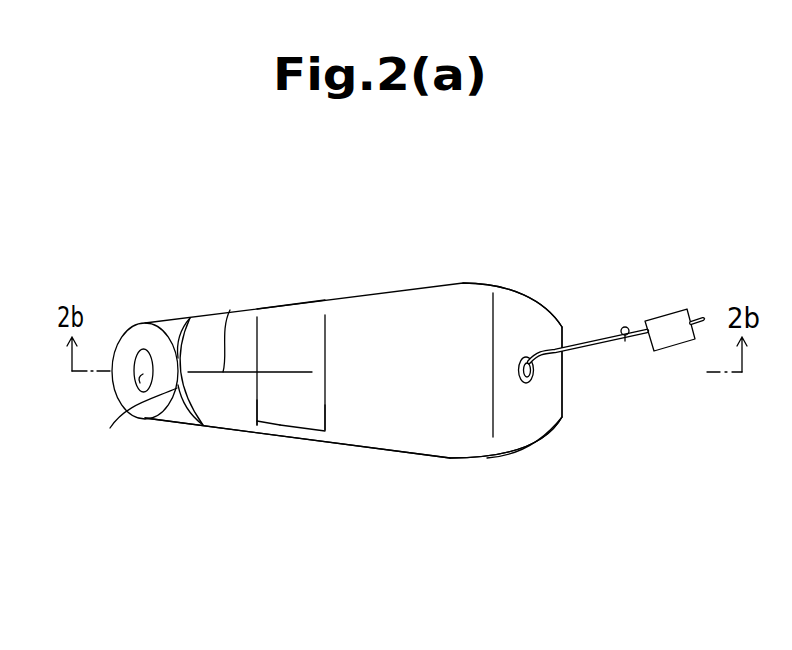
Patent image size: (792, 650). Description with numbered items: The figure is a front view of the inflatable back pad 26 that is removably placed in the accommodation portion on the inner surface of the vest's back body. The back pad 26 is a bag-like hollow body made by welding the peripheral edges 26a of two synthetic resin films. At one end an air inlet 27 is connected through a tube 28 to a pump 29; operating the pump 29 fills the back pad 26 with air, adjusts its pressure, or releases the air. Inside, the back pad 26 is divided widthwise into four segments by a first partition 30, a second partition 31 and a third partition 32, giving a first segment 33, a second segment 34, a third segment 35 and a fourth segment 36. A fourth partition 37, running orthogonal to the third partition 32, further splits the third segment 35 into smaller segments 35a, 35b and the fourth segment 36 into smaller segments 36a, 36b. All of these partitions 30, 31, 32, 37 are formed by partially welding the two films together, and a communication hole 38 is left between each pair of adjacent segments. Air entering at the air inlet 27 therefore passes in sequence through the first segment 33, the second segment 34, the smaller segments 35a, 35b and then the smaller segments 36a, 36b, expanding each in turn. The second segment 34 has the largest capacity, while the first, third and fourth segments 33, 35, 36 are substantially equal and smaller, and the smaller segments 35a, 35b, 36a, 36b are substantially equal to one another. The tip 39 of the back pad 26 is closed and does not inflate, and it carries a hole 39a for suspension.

The back pad 26 is at (392, 303).
The peripheral edges 26a is at (455, 282).
The air inlet 27 is at (533, 377).
The tube 28 is at (588, 340).
The pump 29 is at (667, 322).
The first partition 30 is at (497, 452).
The second partition 31 is at (326, 420).
The third partition 32 is at (257, 412).
The first segment 33 is at (535, 432).
The second segment 34 is at (408, 442).
The third segment 35 is at (308, 432).
The smaller segment 35a is at (275, 422).
The smaller segment 35b is at (293, 330).
The fourth segment 36 is at (212, 415).
The smaller segment 36a is at (197, 404).
The smaller segment 36b is at (197, 333).
The fourth partition 37 is at (229, 324).
The communication hole 38 is at (493, 438).
The tip 39 is at (137, 337).
The hole 39a is at (140, 380).